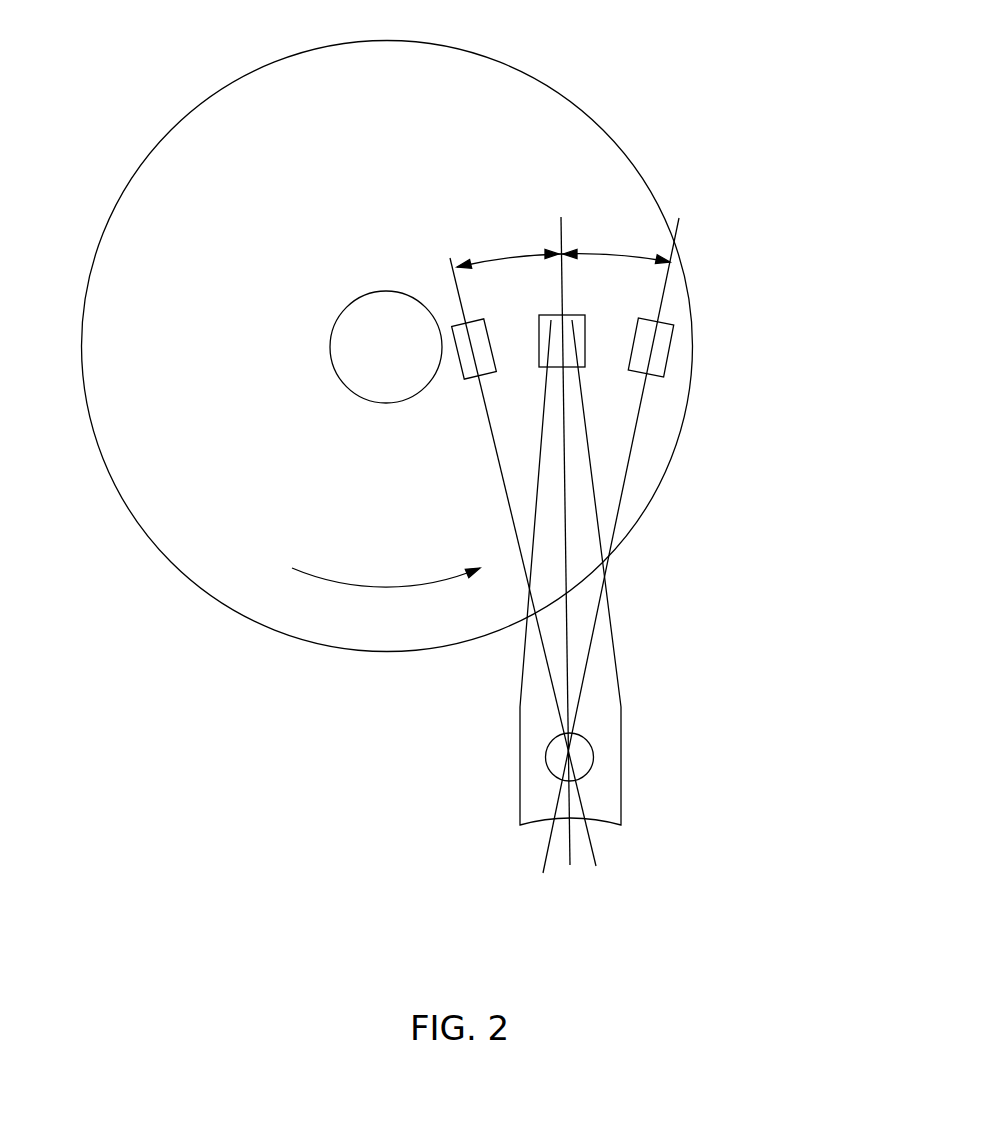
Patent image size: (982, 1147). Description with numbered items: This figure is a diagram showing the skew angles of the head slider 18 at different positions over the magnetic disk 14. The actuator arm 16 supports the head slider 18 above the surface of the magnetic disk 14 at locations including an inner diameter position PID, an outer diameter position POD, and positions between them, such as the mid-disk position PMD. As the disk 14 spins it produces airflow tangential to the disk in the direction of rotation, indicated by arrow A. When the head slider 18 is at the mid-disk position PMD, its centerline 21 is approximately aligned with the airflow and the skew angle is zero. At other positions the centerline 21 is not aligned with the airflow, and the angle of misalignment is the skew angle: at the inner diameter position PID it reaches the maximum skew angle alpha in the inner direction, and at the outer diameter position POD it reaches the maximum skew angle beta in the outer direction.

The magnetic disk 14 is at (203, 168).
The actuator arm 16 is at (640, 681).
The head slider 18 is at (640, 327).
The centerline 21 is at (561, 227).
The arrow A is at (370, 587).
The inner diameter (ID) position PID is at (453, 387).
The mid-disk position PMD is at (595, 382).
The outer diameter (OD) position POD is at (687, 363).